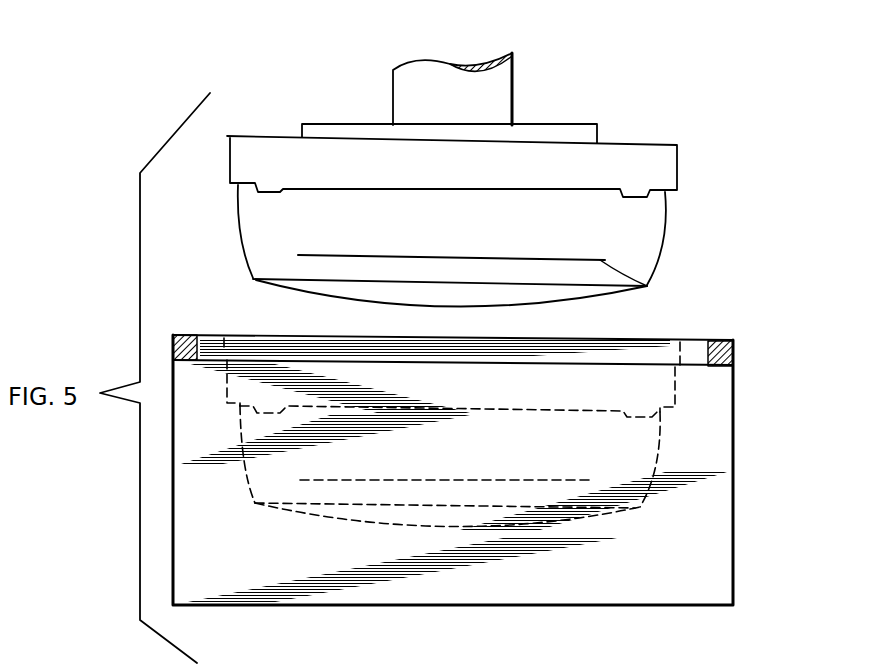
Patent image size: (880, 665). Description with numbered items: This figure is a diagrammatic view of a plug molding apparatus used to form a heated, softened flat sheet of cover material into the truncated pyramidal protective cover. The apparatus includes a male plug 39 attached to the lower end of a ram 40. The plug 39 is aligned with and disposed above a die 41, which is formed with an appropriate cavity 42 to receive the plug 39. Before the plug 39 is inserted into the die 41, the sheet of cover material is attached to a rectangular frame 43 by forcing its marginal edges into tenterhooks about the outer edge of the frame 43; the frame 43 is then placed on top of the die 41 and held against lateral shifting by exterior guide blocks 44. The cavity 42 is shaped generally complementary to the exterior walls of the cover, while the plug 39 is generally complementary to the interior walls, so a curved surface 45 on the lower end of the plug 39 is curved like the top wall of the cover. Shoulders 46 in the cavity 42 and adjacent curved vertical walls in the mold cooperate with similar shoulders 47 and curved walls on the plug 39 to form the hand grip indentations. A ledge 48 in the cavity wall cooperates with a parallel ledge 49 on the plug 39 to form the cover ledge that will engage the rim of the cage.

The male plug 39 is at (523, 113).
The ram 40 is at (497, 52).
The die 41 is at (715, 313).
The cavity 42 is at (635, 457).
The rectangular frame 43 is at (210, 342).
The exterior guide blocks 44 is at (182, 335).
The curved surface 45 is at (557, 302).
The shoulders 46 is at (443, 480).
The shoulders 47 is at (647, 286).
The ledge 48 is at (520, 410).
The ledge 49 is at (537, 190).